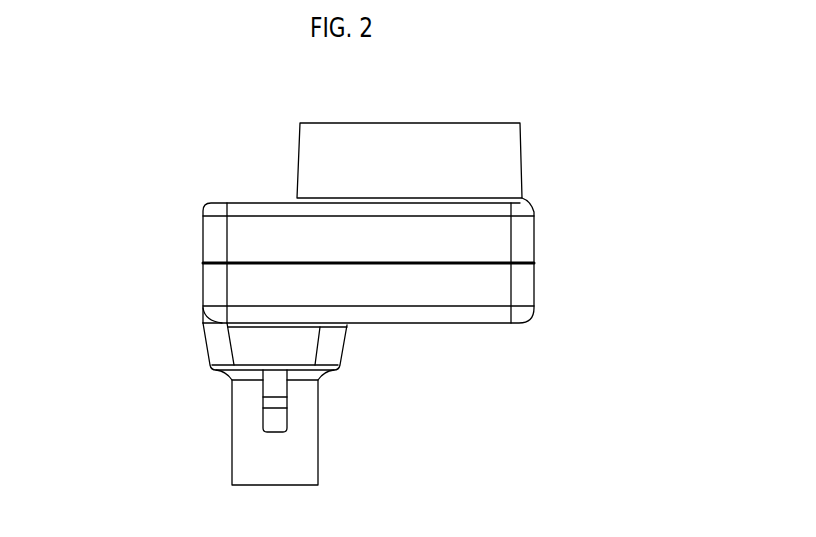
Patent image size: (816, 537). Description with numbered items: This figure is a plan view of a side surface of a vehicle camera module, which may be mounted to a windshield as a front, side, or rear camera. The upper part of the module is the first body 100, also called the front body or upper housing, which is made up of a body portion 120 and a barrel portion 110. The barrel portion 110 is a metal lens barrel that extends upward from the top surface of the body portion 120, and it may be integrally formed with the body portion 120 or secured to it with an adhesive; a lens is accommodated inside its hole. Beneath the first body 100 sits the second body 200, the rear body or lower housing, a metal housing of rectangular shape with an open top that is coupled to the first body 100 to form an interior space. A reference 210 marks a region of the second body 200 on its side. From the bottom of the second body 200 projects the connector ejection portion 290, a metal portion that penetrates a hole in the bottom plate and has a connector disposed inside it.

The first body 100 is at (537, 225).
The barrel portion 110 is at (522, 147).
The body portion 120 is at (203, 233).
The second body 200 is at (537, 290).
The lower cover 210 is at (202, 287).
The connector ejection portion 290 is at (317, 430).